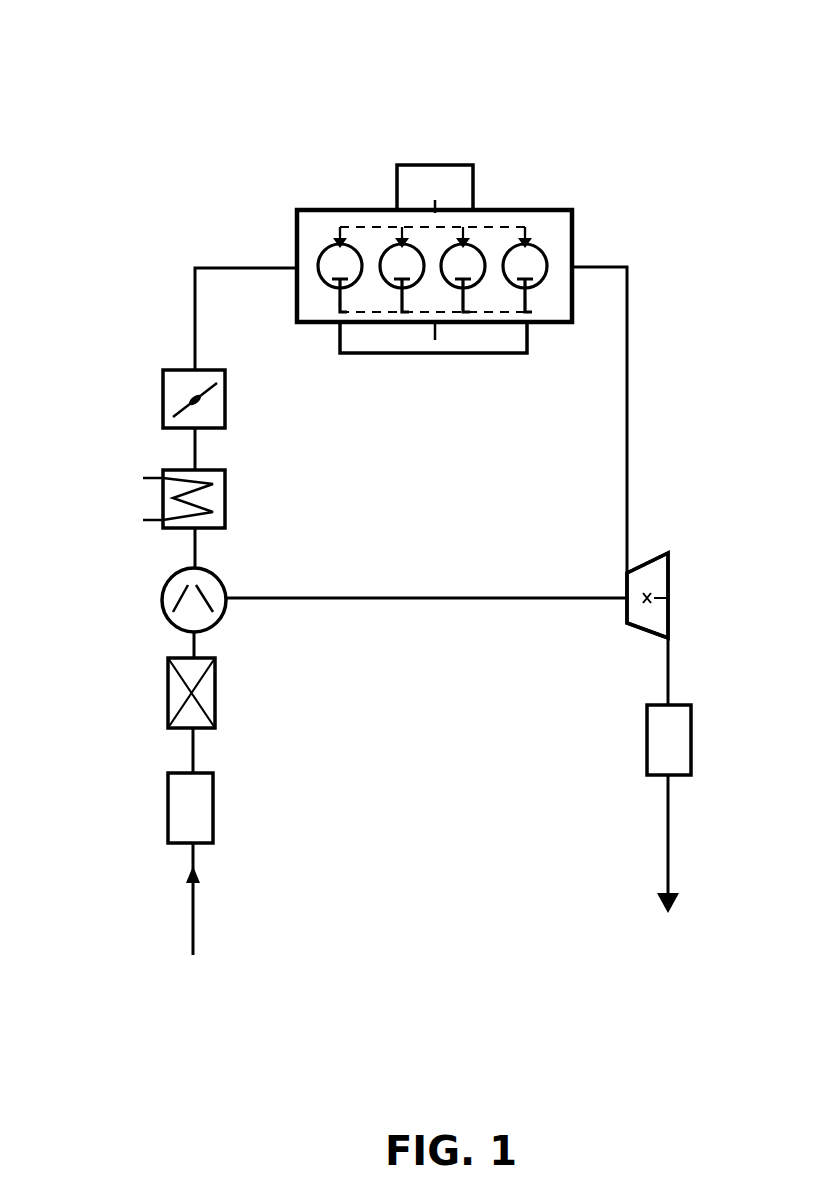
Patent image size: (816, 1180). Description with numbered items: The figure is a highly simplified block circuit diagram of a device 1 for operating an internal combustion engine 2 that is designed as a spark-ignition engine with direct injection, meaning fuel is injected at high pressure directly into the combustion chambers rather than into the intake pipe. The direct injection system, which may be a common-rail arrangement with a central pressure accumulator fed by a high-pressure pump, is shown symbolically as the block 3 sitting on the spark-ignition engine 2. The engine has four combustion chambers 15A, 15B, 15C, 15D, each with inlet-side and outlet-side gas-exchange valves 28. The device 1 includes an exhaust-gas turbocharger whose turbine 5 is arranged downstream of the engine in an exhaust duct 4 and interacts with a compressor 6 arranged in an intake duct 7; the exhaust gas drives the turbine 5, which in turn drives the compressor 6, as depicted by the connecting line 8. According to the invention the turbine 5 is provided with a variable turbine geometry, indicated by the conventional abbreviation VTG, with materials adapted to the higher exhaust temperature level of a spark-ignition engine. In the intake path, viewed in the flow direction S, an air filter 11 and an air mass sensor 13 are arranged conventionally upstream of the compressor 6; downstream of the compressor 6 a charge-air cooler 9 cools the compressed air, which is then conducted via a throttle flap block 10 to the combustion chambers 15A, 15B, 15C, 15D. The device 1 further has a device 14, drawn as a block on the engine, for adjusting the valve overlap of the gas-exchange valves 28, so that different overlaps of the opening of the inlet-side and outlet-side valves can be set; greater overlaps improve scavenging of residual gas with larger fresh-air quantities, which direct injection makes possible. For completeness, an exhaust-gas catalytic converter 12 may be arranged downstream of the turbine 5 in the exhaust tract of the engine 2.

The device 1 is at (662, 137).
The internal combustion engine 2 is at (563, 240).
The injection system block 3 is at (443, 165).
The exhaust duct 4 is at (627, 430).
The turbine 5 is at (668, 568).
The compressor 6 is at (162, 595).
The intake duct 7 is at (190, 646).
The connecting line 8 is at (444, 598).
The charge-air cooler 9 is at (163, 498).
The throttle flap block 10 is at (163, 400).
The air filter 11 is at (168, 808).
The exhaust-gas catalytic converter 12 is at (684, 733).
The air mass sensor 13 is at (168, 705).
The device for adjusting the valve overlap 14 is at (457, 353).
The combustion chamber 15A is at (322, 262).
The combustion chamber 15B is at (393, 258).
The combustion chamber 15C is at (472, 258).
The combustion chamber 15D is at (537, 258).
The gas-exchange valves 28 is at (398, 292).
The variable turbine geometry VTG is at (666, 600).
The flow direction S is at (193, 915).